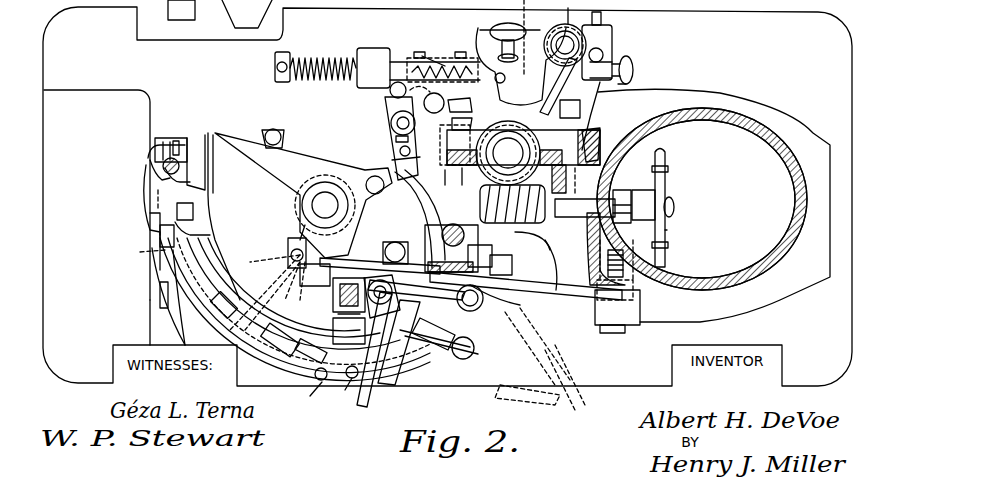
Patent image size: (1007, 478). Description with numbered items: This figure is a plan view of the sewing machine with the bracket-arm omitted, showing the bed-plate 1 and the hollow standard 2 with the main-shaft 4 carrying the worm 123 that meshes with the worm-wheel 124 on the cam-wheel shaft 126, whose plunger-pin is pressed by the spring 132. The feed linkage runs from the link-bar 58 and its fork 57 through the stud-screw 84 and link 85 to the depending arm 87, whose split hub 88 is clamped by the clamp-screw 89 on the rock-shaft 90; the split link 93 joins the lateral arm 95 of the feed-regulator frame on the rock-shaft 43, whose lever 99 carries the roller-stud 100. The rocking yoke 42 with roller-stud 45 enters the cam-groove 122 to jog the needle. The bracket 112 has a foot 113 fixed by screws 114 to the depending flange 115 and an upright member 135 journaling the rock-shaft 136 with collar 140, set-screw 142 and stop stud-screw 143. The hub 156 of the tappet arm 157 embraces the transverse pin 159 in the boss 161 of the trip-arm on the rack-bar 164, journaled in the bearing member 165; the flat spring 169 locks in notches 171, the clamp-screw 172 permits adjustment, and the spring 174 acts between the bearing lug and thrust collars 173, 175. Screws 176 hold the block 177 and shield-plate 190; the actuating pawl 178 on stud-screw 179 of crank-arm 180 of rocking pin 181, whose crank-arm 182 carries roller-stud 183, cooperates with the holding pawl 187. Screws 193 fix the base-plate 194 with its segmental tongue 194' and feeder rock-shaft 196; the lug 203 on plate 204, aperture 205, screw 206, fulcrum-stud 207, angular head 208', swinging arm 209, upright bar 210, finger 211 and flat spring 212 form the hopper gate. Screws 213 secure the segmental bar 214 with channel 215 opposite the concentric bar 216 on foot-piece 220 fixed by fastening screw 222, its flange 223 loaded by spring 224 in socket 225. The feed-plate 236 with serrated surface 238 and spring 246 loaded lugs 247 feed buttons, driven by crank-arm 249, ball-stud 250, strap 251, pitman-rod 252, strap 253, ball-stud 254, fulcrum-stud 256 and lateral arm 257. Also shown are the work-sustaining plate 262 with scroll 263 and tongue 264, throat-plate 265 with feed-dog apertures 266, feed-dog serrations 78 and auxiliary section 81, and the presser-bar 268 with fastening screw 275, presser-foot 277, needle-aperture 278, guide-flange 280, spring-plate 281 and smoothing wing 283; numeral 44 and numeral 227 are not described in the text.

The bed-plate 1 is at (447, 193).
The hollow standard 2 is at (713, 205).
The main-shaft 4 is at (441, 179).
The rocking yoke 42 is at (451, 248).
The rock-shaft 43 is at (440, 235).
The shaft 44 is at (458, 178).
The roller-stud 45 is at (459, 143).
The fork 57 is at (665, 163).
The link-bar 58 is at (667, 231).
The teeth or serrations 78 is at (158, 146).
The auxiliary feed-dog section 81 is at (178, 141).
The stud-screw 84 is at (674, 209).
The link 85 is at (643, 205).
The depending arm 87 is at (621, 190).
The split hub 88 is at (622, 216).
The clamp-screw 89 is at (614, 197).
The rock-shaft 90 is at (585, 208).
The split link 93 is at (535, 235).
The lateral arm 95 is at (482, 256).
The lateral arm or lever 99 is at (420, 219).
The roller-stud 100 is at (392, 161).
The bracket 112 is at (590, 105).
The foot 113 is at (523, 147).
The screws 114 is at (572, 178).
The depending flange 115 is at (598, 164).
The cam-groove 122 is at (578, 181).
The worm 123 is at (512, 211).
The worm-wheel 124 is at (463, 120).
The cam-wheel shaft 126 is at (508, 153).
The spring 132 is at (465, 105).
The upright member 135 is at (598, 28).
The rock-shaft 136 is at (565, 45).
The collar 140 is at (555, 38).
The set-screw 142 is at (600, 20).
The stud-screw 143 is at (603, 54).
The hub 156 is at (568, 12).
The tappet arm 157 is at (547, 89).
The transverse pin 159 is at (570, 109).
The boss 161 is at (521, 66).
The rack-bar 164 is at (395, 68).
The bearing member 165 is at (373, 68).
The flat spring 169 is at (492, 74).
The notches 171 is at (523, 37).
The clamp-screw 172 is at (508, 36).
The thrust collar 173 is at (628, 85).
The spring 174 is at (326, 80).
The thrust collar 175 is at (279, 77).
The screws 176 is at (416, 52).
The block 177 is at (432, 53).
The actuating pawl 178 is at (410, 88).
The stud-screw 179 is at (390, 91).
The crank-arm 180 is at (387, 108).
The rocking pin 181 is at (391, 124).
The crank-arm 182 is at (396, 139).
The roller-stud 183 is at (399, 151).
The holding pawl 187 is at (436, 109).
The shield-plate 190 is at (442, 68).
The screws 193 is at (378, 243).
The base-plate 194 is at (265, 277).
The segmental tongue 194' is at (307, 398).
The feeder rock-shaft 196 is at (325, 205).
The lug 203 is at (441, 364).
The plate 204 is at (416, 290).
The elongated aperture 205 is at (433, 338).
The screw 206 is at (435, 354).
The fulcrum-stud 207 is at (484, 296).
The angular head 208' is at (507, 300).
The swinging arm 209 is at (526, 346).
The upright bar 210 is at (458, 353).
The finger 211 is at (470, 356).
The flat spring 212 is at (497, 265).
The screws 213 is at (343, 390).
The segmental bar 214 is at (295, 309).
The groove or channel 215 is at (137, 258).
The concentric bar 216 is at (208, 212).
The foot-piece 220 is at (382, 293).
The fastening screw 222 is at (390, 248).
The upturned lip or flange 223 is at (343, 329).
The spring 224 is at (349, 291).
The socket 225 is at (316, 275).
The stop 227 is at (293, 326).
The segmental feed-plate 236 is at (318, 376).
The serrated button-engaging surface 238 is at (305, 382).
The spring 246 is at (318, 190).
The button-engaging lugs 247 is at (216, 197).
The crank-arm 249 is at (289, 225).
The ball-stud 250 is at (272, 284).
The strap 251 is at (286, 281).
The pitman-rod 252 is at (365, 270).
The strap 253 is at (595, 300).
The ball-stud 254 is at (636, 290).
The fulcrum-stud 256 is at (615, 334).
The lateral arm 257 is at (553, 265).
The work-sustaining plate 262 is at (115, 316).
The edge turning scroll 263 is at (163, 270).
The central tongue 264 is at (160, 300).
The throat-plate 265 is at (196, 162).
The feed-dog apertures 266 is at (163, 140).
The presser-bar 268 is at (179, 167).
The fastening screw 275 is at (150, 162).
The presser-foot 277 is at (150, 232).
The needle-aperture 278 is at (165, 175).
The guide-flange 280 is at (165, 247).
The spring-plate 281 is at (157, 192).
The fabric smoothing wing 283 is at (200, 236).